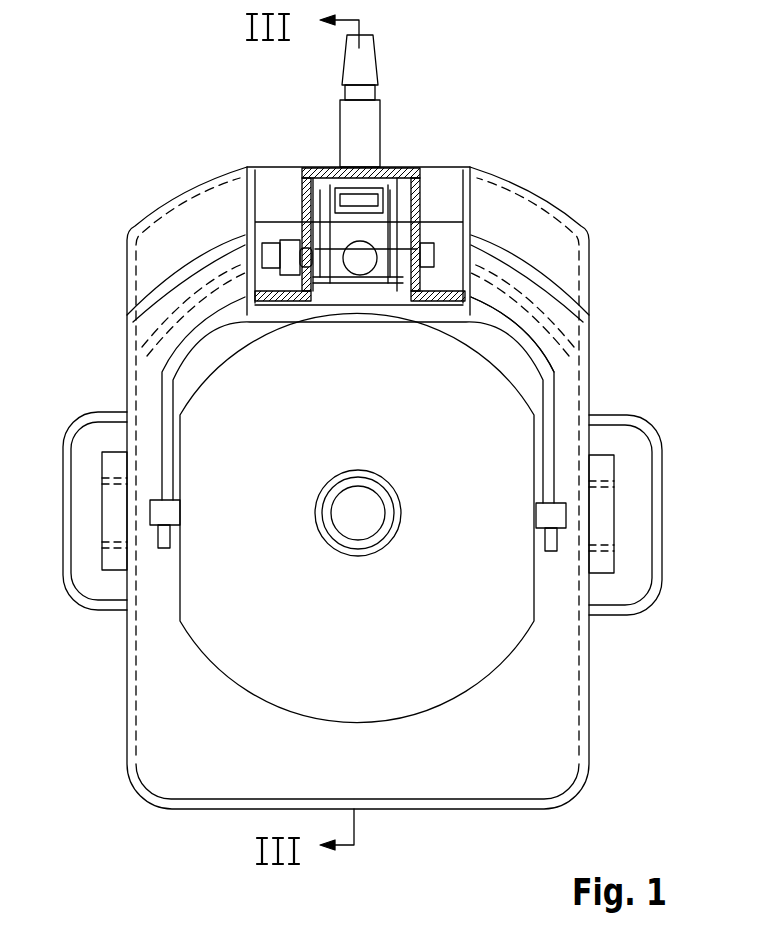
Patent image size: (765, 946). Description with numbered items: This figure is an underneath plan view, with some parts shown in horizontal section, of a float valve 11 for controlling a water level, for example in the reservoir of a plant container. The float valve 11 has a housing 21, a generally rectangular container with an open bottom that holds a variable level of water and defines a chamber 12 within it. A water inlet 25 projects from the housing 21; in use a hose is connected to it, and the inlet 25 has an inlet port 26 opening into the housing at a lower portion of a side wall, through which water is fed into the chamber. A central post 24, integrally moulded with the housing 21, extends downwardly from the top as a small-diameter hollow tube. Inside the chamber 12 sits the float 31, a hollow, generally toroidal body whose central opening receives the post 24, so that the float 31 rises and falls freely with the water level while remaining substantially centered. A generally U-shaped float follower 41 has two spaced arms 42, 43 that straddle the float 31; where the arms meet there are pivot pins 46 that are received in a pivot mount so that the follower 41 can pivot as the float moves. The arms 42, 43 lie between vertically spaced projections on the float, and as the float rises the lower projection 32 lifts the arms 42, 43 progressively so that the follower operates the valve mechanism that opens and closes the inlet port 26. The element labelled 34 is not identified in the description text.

The float valve 11 is at (203, 815).
The chamber 12 is at (522, 732).
The housing 21 is at (127, 762).
The central post 24 is at (377, 522).
The water inlet 25 is at (355, 128).
The inlet port 26 is at (362, 185).
The float 31 is at (257, 668).
The lower projection 32 is at (148, 523).
The hub 34 is at (397, 486).
The float follower 41 is at (186, 331).
The first arm 42 is at (160, 384).
The second arm 43 is at (510, 336).
The pivot pins 46 is at (418, 257).